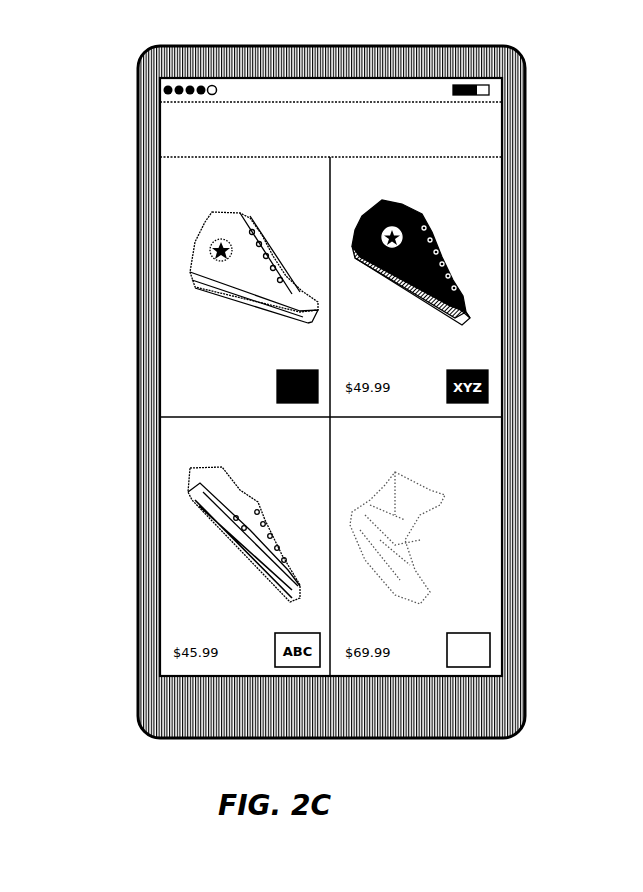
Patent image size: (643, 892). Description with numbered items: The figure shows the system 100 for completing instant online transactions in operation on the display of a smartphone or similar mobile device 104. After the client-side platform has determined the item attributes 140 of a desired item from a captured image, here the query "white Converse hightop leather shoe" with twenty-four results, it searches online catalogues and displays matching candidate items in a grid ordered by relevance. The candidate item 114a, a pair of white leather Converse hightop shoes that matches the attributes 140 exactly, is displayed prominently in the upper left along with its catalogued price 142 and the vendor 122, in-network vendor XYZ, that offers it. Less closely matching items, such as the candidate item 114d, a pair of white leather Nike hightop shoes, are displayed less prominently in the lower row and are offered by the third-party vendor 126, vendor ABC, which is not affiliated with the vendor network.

The system 100 is at (74, 110).
The mobile device 104 is at (513, 75).
The item attributes 140 is at (497, 120).
The candidate item 114a is at (194, 244).
The candidate item 114d is at (446, 536).
The price 142 is at (196, 368).
The vendor 122 is at (277, 386).
The third-party vendor 126 is at (490, 650).